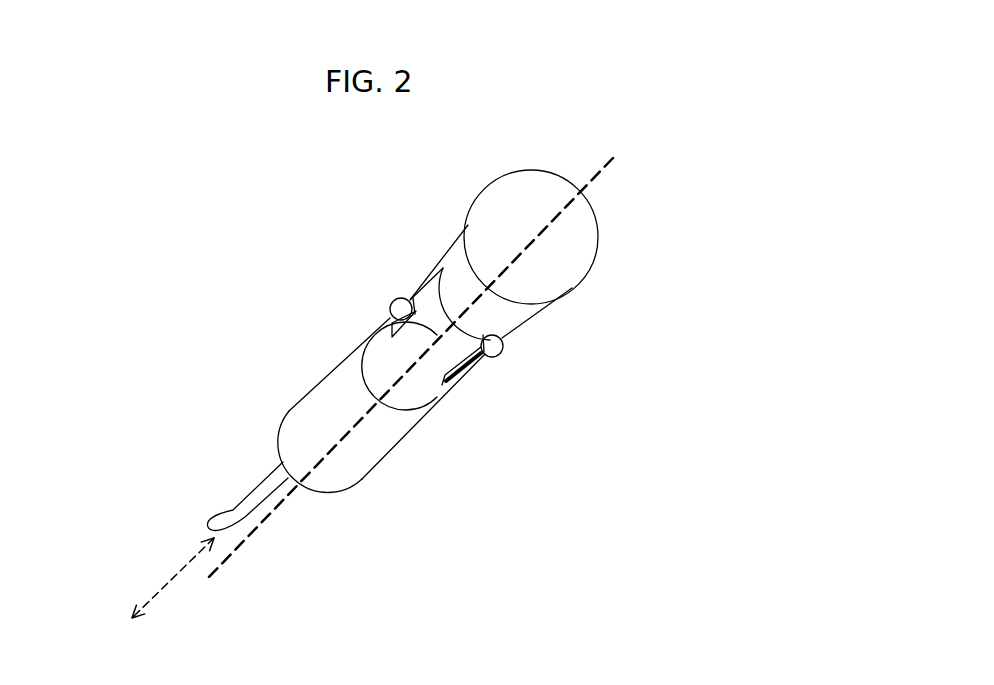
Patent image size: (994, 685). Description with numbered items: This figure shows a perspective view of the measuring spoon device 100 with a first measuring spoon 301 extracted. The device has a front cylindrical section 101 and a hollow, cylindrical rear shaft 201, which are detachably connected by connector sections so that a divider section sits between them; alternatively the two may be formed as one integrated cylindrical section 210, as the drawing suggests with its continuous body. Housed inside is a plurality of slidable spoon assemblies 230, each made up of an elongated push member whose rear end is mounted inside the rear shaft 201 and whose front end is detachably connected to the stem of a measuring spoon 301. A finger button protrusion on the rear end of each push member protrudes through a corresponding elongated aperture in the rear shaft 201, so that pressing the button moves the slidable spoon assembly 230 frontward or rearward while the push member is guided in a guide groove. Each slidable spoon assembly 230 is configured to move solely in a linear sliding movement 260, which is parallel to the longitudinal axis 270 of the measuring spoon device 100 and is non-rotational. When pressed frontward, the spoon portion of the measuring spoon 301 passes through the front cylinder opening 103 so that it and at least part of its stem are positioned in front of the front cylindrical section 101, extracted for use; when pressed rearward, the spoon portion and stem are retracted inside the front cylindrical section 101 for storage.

The measuring spoon device 100 is at (249, 199).
The front cylindrical section 101 is at (387, 460).
The front cylinder opening 103 is at (320, 500).
The rear shaft 201 is at (457, 393).
The integrated cylindrical section 210 is at (199, 334).
The slidable spoon assembly 230 is at (361, 322).
The linear sliding movement 260 is at (168, 575).
The longitudinal axis 270 is at (223, 570).
The measuring spoon 301 is at (250, 497).